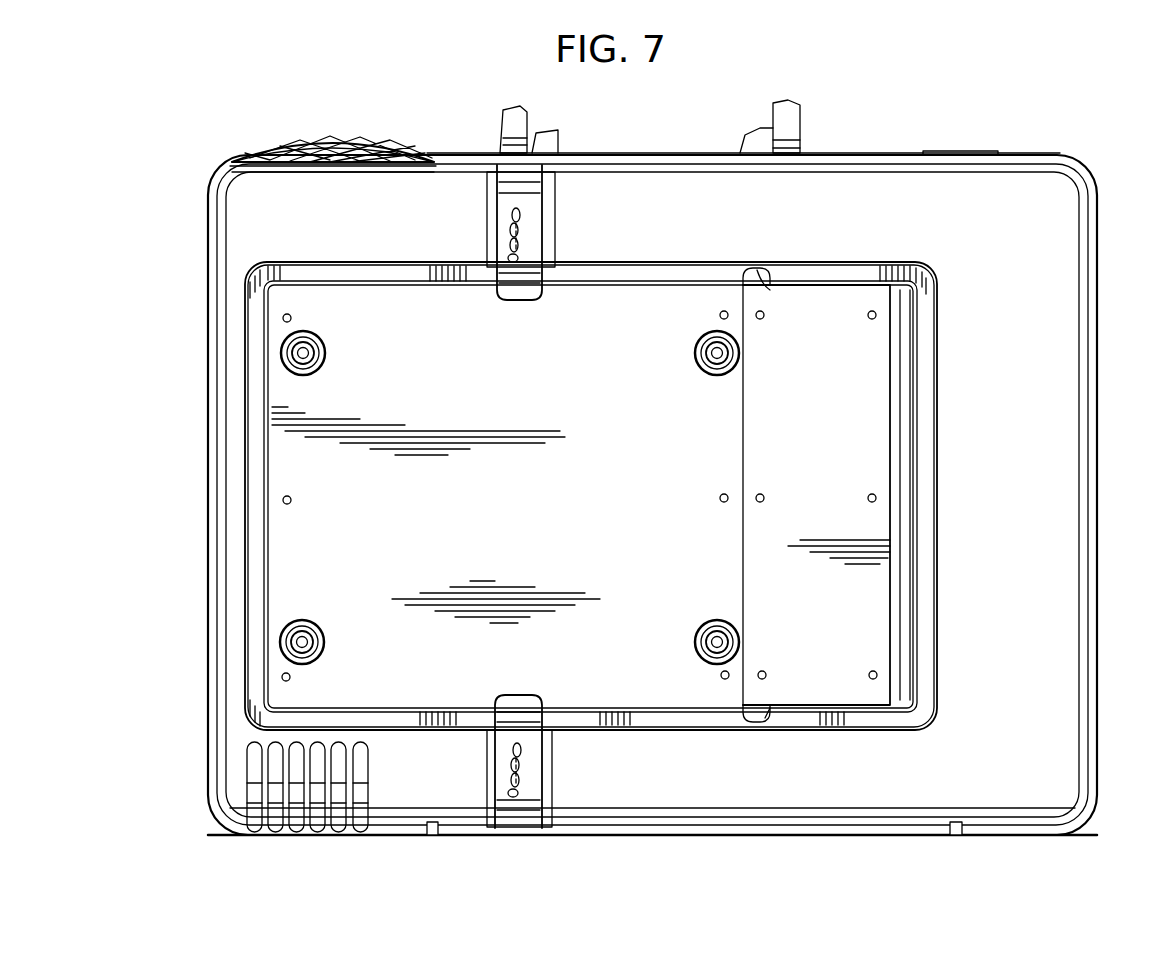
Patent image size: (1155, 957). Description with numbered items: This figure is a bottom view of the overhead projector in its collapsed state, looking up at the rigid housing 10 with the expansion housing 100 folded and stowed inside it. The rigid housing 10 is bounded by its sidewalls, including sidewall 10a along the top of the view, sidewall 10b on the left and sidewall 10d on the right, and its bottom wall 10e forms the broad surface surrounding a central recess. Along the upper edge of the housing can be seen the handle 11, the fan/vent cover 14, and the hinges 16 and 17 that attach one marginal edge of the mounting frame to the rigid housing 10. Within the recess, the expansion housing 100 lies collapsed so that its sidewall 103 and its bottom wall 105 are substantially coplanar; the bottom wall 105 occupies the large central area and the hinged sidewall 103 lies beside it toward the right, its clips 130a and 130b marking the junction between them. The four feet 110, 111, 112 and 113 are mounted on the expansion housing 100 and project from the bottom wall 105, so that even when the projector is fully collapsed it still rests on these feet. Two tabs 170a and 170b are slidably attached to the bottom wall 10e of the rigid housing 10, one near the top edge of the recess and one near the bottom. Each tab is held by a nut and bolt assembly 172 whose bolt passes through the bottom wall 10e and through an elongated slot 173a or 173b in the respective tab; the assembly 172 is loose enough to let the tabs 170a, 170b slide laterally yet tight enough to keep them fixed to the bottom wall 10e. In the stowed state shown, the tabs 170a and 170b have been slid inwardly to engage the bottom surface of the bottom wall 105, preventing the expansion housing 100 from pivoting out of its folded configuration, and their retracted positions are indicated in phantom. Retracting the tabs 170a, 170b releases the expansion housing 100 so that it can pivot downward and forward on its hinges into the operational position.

The rigid housing 10 is at (850, 840).
The sidewall 10a is at (900, 165).
The sidewall 10b is at (222, 502).
The sidewall 10d is at (1087, 530).
The bottom wall 10e is at (1025, 718).
The handle 11 is at (790, 130).
The fan/vent cover 14 is at (352, 145).
The hinge 16 is at (472, 153).
The hinge 17 is at (985, 152).
The expansion housing 100 is at (684, 300).
The sidewall 103 is at (880, 400).
The bottom wall 105 is at (533, 494).
The foot 110 is at (310, 362).
The foot 111 is at (707, 364).
The foot 112 is at (322, 645).
The foot 113 is at (707, 655).
The lower clip 130a is at (768, 715).
The upper clip 130b is at (762, 278).
The tab 170a is at (545, 207).
The tab 170b is at (545, 765).
The nut and bolt assembly 172 is at (510, 212).
The elongated slot 173a is at (520, 236).
The elongated slot 173b is at (520, 790).